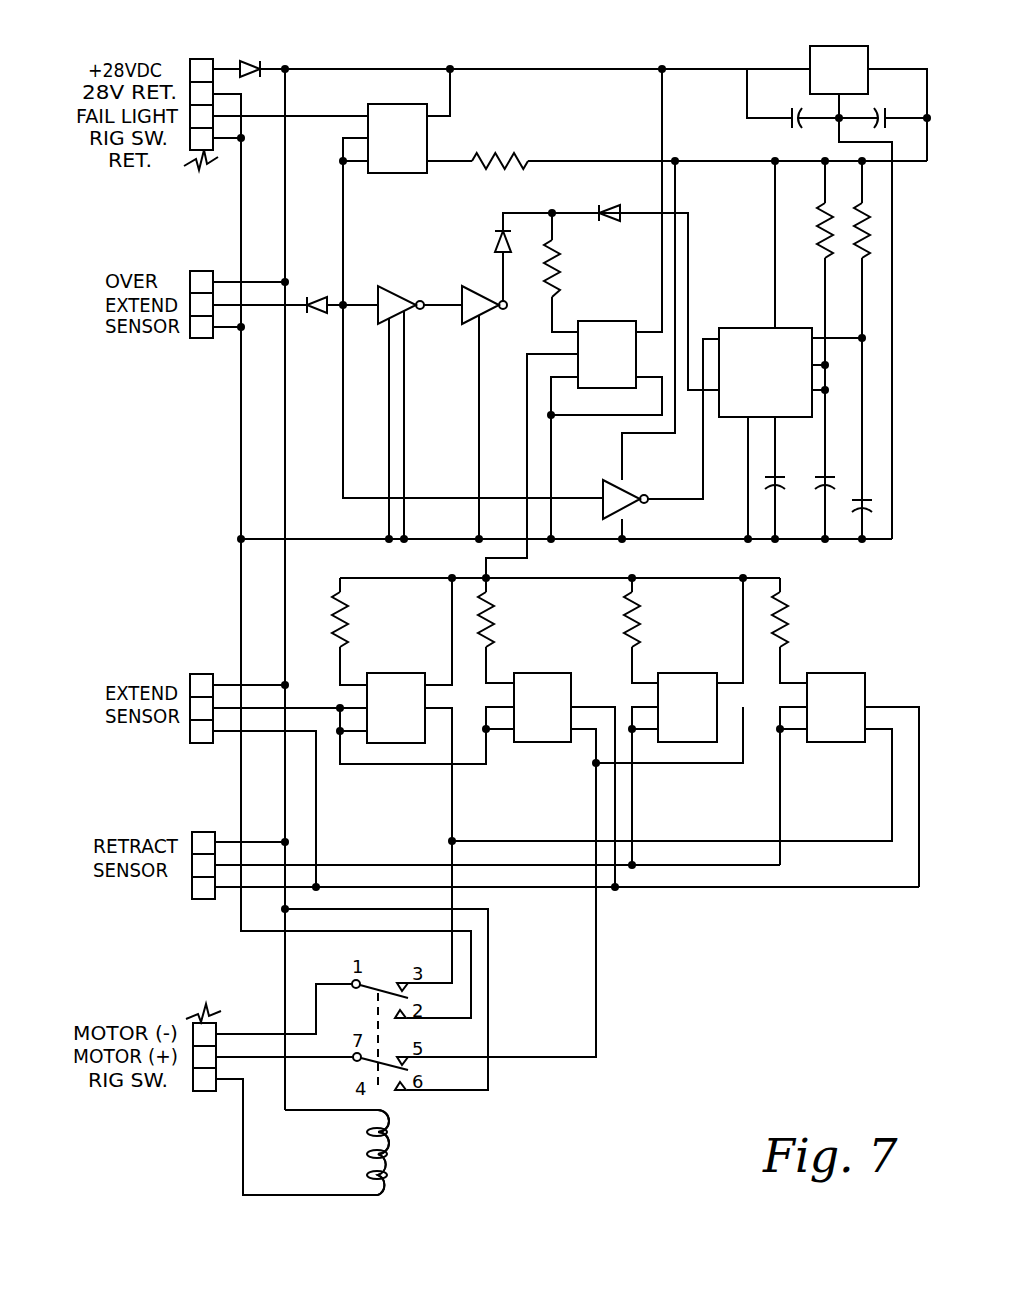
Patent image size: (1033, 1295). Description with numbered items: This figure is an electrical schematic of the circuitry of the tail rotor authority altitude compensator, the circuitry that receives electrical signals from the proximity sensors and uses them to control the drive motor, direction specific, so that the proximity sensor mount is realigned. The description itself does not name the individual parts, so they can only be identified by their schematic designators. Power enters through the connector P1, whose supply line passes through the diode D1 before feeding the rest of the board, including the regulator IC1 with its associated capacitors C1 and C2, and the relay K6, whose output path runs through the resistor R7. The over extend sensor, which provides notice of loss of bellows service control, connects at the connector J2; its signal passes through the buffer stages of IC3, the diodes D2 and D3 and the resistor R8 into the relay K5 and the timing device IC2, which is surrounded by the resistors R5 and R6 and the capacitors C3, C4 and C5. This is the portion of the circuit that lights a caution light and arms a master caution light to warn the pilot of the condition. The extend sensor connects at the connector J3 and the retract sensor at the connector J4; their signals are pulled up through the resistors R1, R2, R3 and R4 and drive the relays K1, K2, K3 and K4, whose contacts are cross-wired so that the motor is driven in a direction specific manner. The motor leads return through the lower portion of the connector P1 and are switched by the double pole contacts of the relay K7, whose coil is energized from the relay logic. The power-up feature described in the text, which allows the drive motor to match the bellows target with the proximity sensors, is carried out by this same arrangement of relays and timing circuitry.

The connector P1 is at (202, 562).
The diode D1 is at (286, 173).
The relay K6 is at (397, 128).
The resistor R7 is at (500, 147).
The voltage regulator IC1 is at (838, 81).
The capacitor C1 is at (783, 111).
The capacitor C2 is at (894, 111).
The over extend sensor connector J2 is at (201, 293).
The buffer/inverter IC3 is at (511, 393).
The diode D2 is at (485, 236).
The diode D3 is at (612, 200).
The resistor R8 is at (570, 268).
The relay K5 is at (607, 343).
The timer IC2 is at (765, 372).
The resistor R5 is at (811, 220).
The resistor R6 is at (851, 220).
The capacitor C3 is at (853, 516).
The capacitor C4 is at (816, 494).
The capacitor C5 is at (786, 471).
The resistor R1 is at (357, 619).
The resistor R2 is at (502, 619).
The resistor R3 is at (648, 619).
The resistor R4 is at (795, 619).
The relay K1 is at (396, 696).
The relay K2 is at (542, 695).
The relay K3 is at (687, 695).
The relay K4 is at (836, 695).
The extend sensor connector J3 is at (201, 696).
The retract sensor connector J4 is at (203, 852).
The relay coil K7 is at (403, 1152).